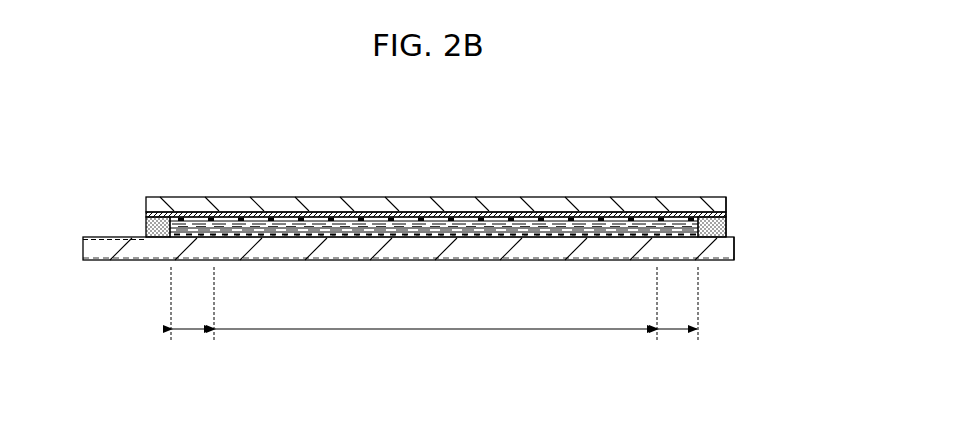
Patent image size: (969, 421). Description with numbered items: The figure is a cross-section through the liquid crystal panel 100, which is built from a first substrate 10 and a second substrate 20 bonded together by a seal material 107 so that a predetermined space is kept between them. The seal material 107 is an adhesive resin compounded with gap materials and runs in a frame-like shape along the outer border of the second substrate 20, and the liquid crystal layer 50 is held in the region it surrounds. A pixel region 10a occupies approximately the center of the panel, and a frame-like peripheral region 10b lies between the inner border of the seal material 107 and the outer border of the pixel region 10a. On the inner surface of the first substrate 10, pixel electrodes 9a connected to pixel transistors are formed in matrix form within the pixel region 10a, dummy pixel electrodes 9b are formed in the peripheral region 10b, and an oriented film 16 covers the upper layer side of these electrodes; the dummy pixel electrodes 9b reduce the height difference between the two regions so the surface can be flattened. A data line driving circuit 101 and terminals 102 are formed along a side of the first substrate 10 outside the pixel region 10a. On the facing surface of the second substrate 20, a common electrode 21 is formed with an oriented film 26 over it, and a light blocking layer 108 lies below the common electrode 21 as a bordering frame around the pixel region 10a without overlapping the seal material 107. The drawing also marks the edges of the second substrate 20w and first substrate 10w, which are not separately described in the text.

The liquid crystal panel 100 is at (660, 132).
The second substrate 20 is at (716, 192).
The edge of counter substrate 20w is at (727, 200).
The common electrode 21 is at (355, 213).
The oriented film 26 is at (466, 217).
The oriented film 16 is at (440, 244).
The dummy pixel electrodes 9b is at (191, 222).
The pixel electrodes 9a is at (423, 244).
The liquid crystal layer 50 is at (535, 238).
The seal material 107 is at (146, 200).
The light blocking layer 108 is at (220, 212).
The first substrate 10 is at (575, 263).
The edge of element substrate 10w is at (735, 248).
The terminals 102 is at (96, 236).
The data line driving circuit 101 is at (132, 262).
The pixel region 10a is at (435, 345).
The peripheral region 10b is at (434, 314).